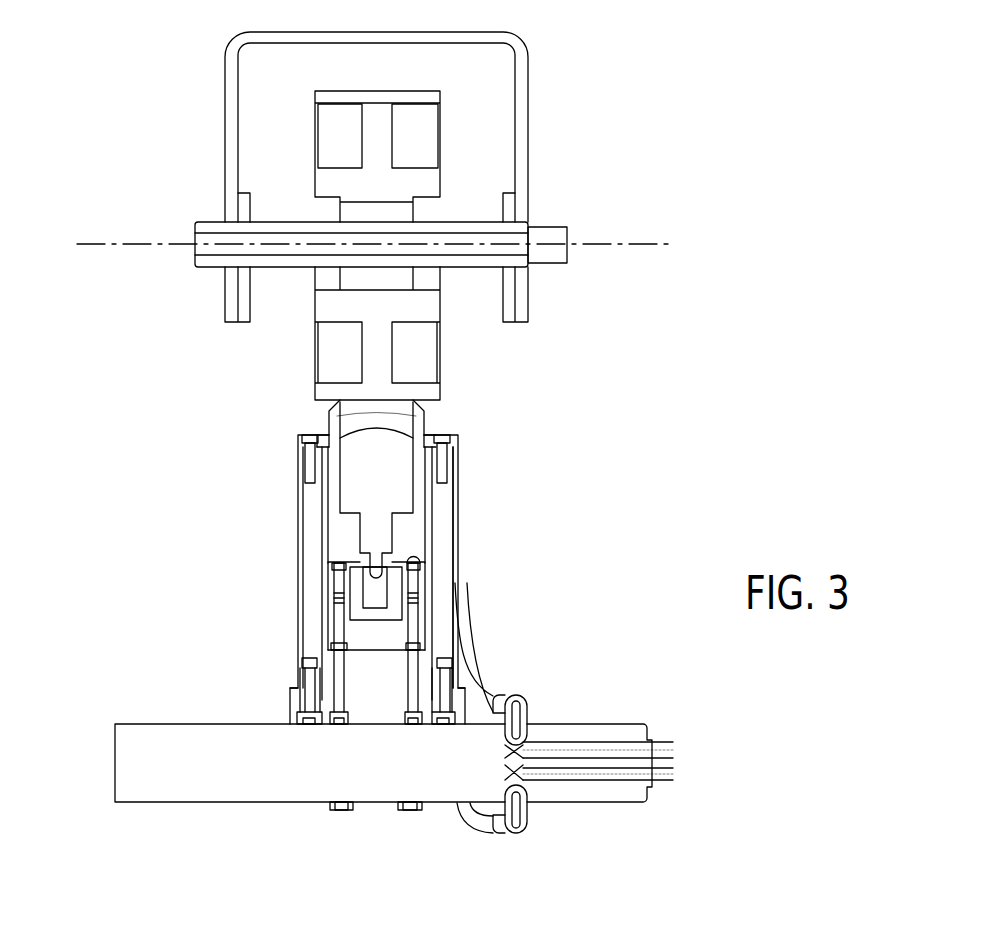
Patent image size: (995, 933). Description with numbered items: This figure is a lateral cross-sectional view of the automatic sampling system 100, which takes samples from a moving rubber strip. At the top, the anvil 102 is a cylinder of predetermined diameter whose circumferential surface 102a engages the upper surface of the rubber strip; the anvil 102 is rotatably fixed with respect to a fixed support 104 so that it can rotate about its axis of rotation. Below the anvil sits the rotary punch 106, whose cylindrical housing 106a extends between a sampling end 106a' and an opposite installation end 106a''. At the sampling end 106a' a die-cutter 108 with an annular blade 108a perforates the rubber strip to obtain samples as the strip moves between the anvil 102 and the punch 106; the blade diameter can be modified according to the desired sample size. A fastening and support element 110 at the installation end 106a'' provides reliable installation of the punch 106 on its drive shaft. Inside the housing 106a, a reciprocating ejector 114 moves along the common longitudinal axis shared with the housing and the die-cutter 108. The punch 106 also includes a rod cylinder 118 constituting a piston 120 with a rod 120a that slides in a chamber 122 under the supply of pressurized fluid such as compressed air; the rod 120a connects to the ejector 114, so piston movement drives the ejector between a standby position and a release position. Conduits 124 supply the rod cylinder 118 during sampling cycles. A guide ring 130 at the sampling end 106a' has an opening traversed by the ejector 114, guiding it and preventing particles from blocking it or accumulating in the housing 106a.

The automatic sampling system 100 is at (132, 110).
The anvil 102 is at (440, 162).
The circumferential surface 102a is at (427, 401).
The fixed support 104 is at (530, 57).
The rotary punch 106 is at (298, 527).
The cylindrical housing 106a is at (506, 567).
The sampling end 106a' is at (248, 461).
The installation end 106a'' is at (326, 686).
The die-cutter 108 is at (326, 436).
The annular blade 108a is at (327, 407).
The fastening and support element 110 is at (290, 697).
The reciprocating ejector 114 is at (398, 484).
The rod cylinder 118 is at (420, 588).
The piston 120 is at (360, 612).
The rod 120a is at (372, 585).
The chamber 122 is at (393, 650).
The conduits 124 is at (660, 777).
The guide ring 130 is at (422, 453).